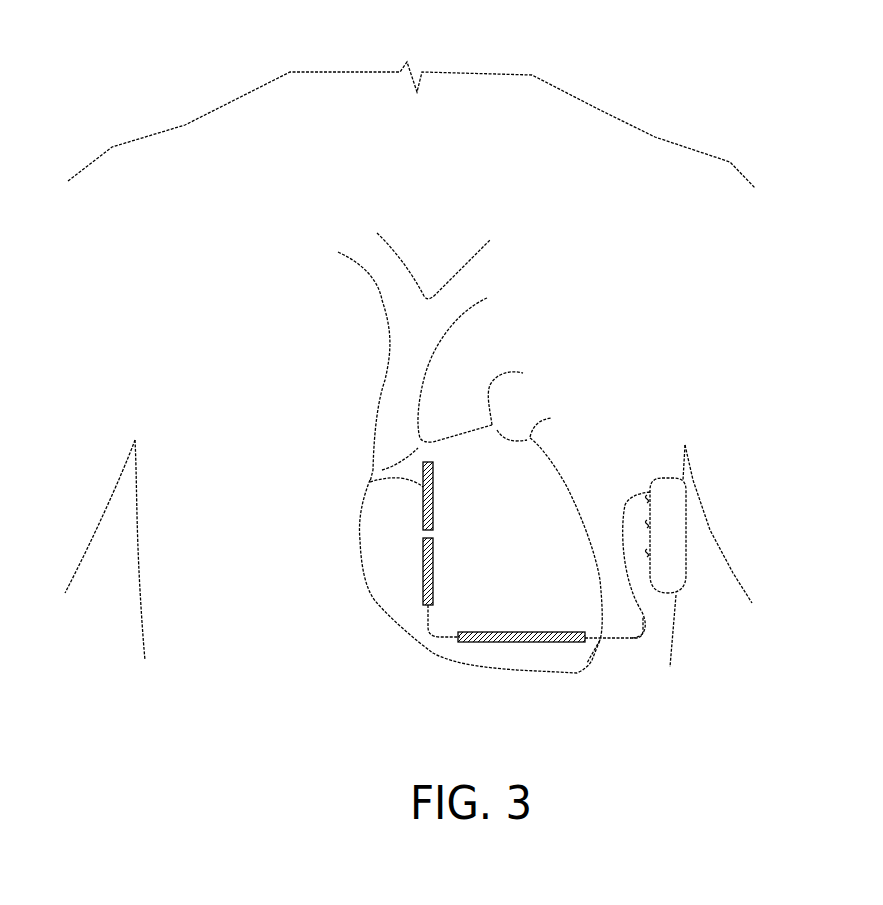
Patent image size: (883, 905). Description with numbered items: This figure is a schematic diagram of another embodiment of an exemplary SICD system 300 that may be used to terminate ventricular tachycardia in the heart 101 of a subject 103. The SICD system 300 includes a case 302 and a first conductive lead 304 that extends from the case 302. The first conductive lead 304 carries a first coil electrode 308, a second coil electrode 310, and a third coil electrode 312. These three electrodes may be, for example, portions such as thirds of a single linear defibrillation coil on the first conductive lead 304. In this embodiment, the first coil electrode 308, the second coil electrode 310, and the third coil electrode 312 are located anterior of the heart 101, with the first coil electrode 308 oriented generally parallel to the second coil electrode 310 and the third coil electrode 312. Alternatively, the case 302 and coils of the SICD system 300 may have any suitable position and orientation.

The SICD system 300 is at (745, 85).
The subject 103 is at (655, 137).
The heart 101 is at (378, 283).
The case 302 is at (677, 480).
The first conductive lead 304 is at (647, 615).
The first coil electrode 308 is at (512, 640).
The second coil electrode 310 is at (420, 602).
The third coil electrode 312 is at (373, 480).